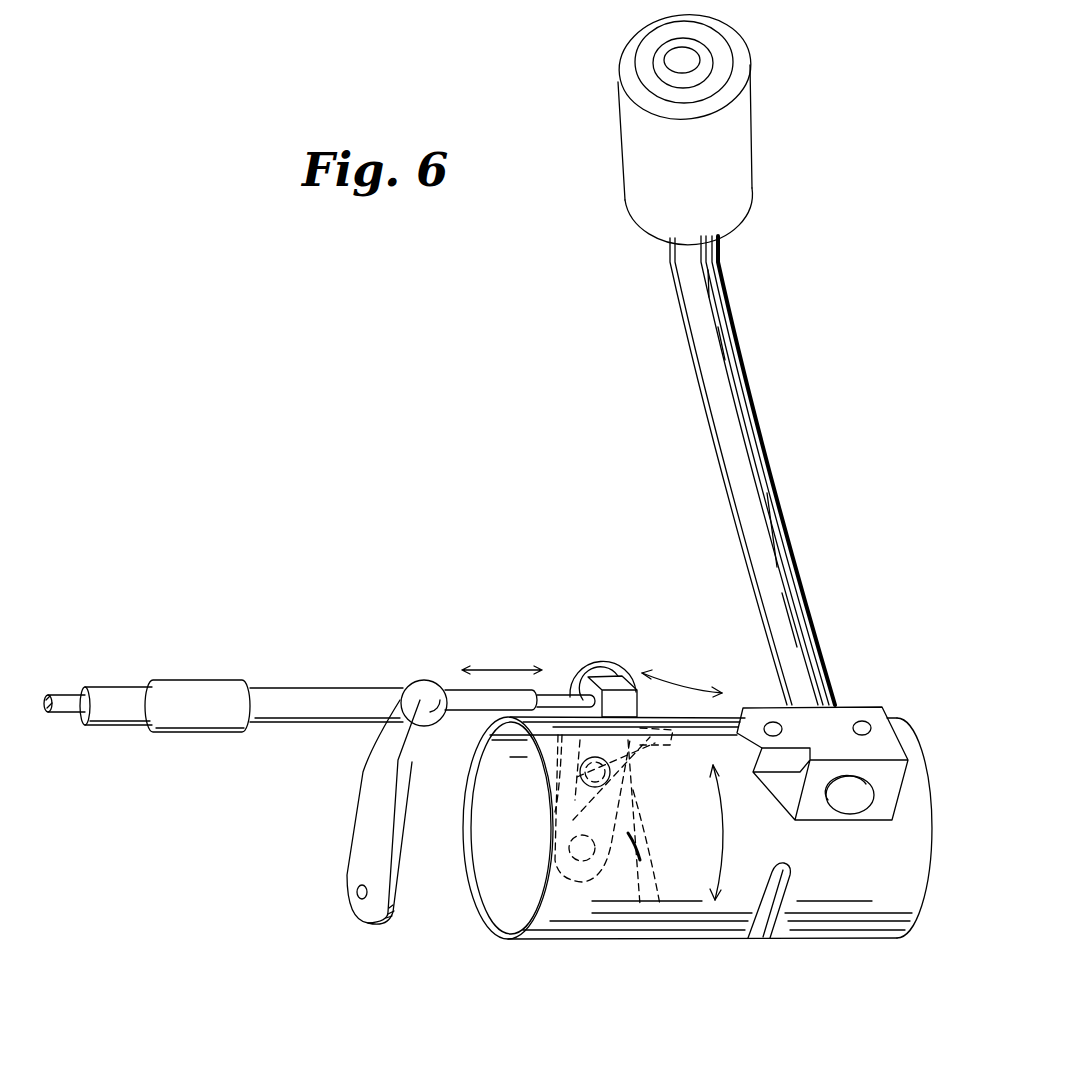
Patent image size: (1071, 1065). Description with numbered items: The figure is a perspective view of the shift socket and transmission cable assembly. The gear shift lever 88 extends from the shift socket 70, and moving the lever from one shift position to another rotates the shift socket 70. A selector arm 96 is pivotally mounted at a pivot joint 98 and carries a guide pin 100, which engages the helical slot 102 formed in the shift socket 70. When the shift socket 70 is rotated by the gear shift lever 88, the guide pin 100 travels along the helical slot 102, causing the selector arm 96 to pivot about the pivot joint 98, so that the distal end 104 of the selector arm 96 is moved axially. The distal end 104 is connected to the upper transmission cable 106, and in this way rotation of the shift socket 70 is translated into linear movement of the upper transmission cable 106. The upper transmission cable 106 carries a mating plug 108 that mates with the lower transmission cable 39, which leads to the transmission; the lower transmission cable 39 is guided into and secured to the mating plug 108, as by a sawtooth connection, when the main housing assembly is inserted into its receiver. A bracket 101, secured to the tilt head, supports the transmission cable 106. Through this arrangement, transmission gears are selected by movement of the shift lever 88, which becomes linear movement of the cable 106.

The lower transmission cable 39 is at (66, 696).
The mating plug 108 is at (190, 680).
The upper transmission cable 106 is at (457, 690).
The distal end 104 is at (578, 665).
The helical slot 102 is at (633, 745).
The gear shift lever 88 is at (750, 368).
The shift socket 70 is at (920, 905).
The bracket 101 is at (358, 846).
The pivot joint 98 is at (593, 876).
The selector arm 96 is at (640, 905).
The guide pin 100 is at (660, 905).